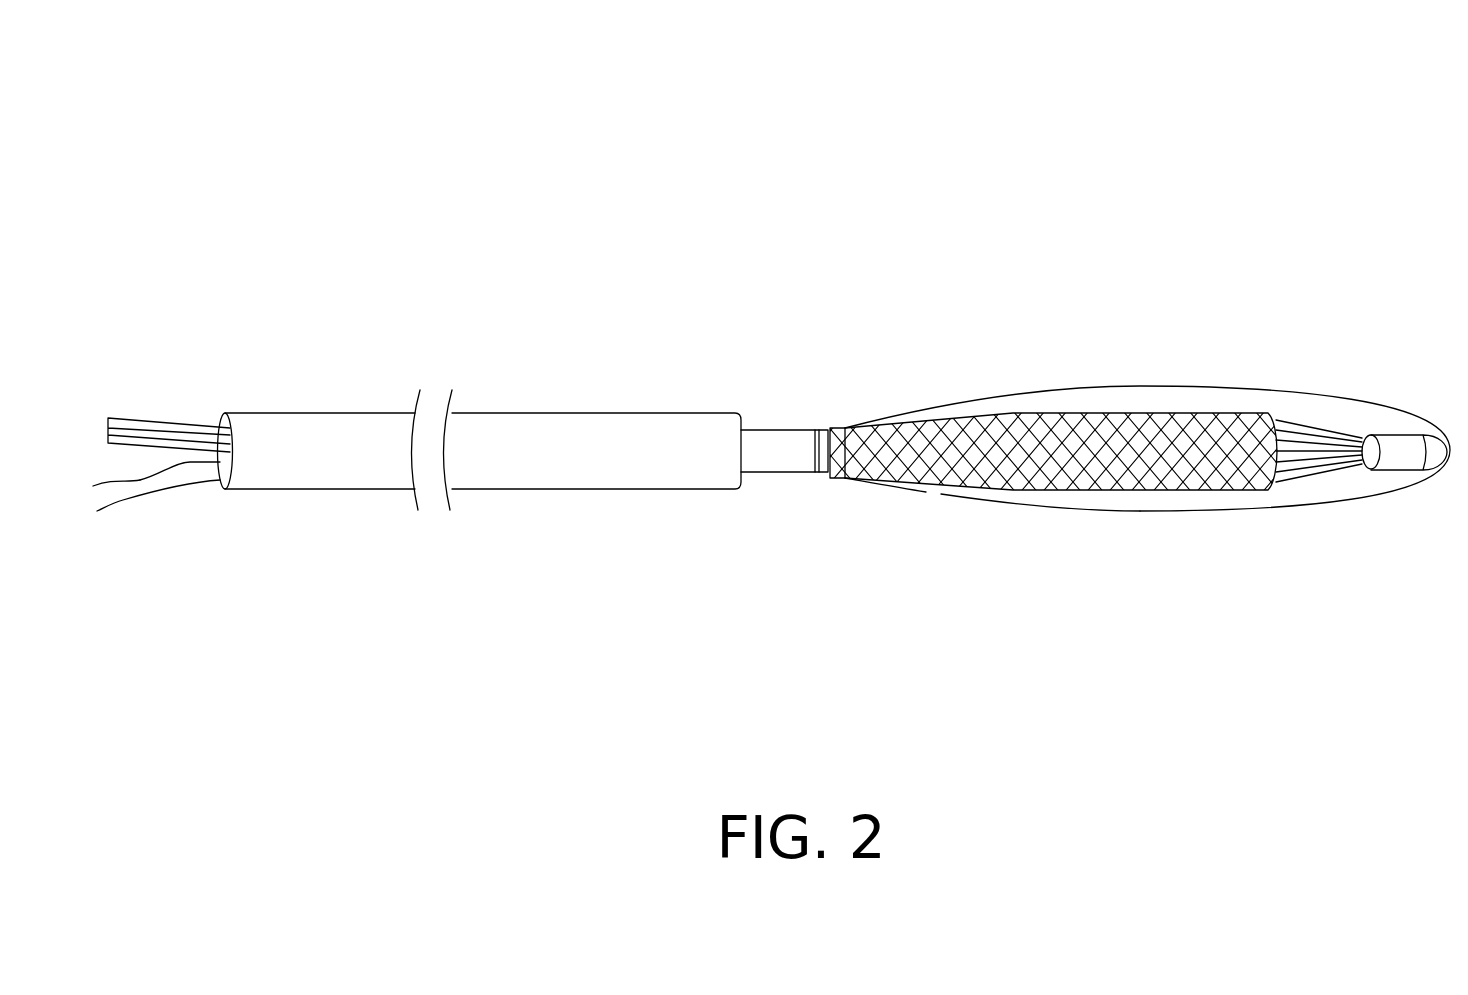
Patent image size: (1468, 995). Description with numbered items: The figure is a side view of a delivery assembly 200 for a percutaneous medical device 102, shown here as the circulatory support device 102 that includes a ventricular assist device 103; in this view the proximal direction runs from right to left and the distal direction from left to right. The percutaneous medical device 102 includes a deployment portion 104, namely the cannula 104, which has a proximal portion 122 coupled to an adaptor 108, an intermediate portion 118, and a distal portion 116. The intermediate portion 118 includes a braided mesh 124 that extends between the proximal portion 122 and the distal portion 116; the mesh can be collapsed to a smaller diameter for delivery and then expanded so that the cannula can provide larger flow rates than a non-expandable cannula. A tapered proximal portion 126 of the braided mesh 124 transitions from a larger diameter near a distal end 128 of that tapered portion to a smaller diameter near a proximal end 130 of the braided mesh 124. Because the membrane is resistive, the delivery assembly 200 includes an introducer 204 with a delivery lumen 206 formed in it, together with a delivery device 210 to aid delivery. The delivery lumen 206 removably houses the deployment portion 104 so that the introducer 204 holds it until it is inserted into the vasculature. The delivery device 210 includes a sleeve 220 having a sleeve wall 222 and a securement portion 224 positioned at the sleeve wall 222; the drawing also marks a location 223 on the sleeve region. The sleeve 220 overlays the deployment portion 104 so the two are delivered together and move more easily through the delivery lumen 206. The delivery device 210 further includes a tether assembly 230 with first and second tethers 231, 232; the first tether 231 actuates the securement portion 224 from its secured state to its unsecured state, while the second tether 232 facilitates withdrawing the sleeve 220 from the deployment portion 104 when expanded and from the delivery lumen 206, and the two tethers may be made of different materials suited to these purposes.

The delivery assembly 200 is at (252, 138).
The percutaneous medical device 102 is at (1250, 595).
The ventricular assist device 103 is at (165, 408).
The deployment portion 104 is at (1440, 348).
The adaptor 108 is at (835, 548).
The distal portion 116 is at (1280, 548).
The intermediate portion 118 is at (1275, 548).
The proximal portion 122 is at (806, 426).
The braided mesh 124 is at (1008, 470).
The tapered proximal portion 126 is at (1003, 415).
The distal end 128 is at (1025, 428).
The proximal end 130 is at (823, 476).
The introducer 204 is at (557, 410).
The delivery lumen 206 is at (222, 415).
The delivery device 210 is at (230, 520).
The sleeve 220 is at (1225, 383).
The sleeve wall 222 is at (1150, 510).
The membrane opening 223 is at (932, 500).
The securement portion 224 is at (1313, 397).
The tether assembly 230 is at (162, 510).
The first tether 231 is at (98, 503).
The second tether 232 is at (198, 490).